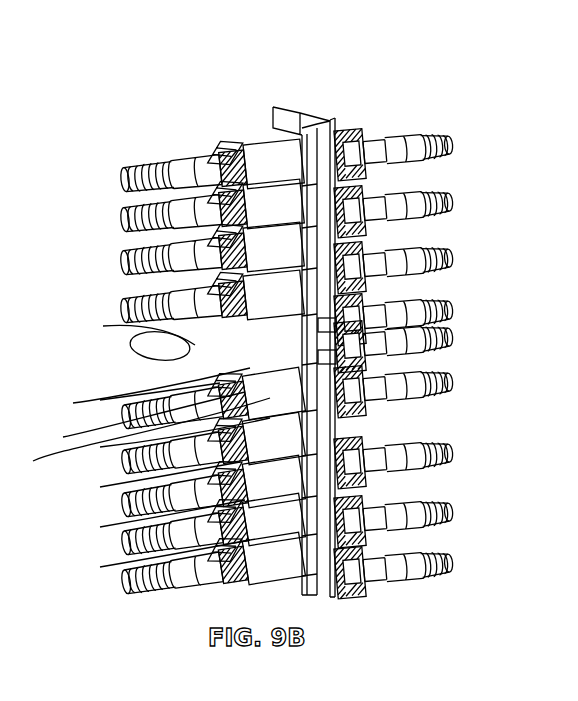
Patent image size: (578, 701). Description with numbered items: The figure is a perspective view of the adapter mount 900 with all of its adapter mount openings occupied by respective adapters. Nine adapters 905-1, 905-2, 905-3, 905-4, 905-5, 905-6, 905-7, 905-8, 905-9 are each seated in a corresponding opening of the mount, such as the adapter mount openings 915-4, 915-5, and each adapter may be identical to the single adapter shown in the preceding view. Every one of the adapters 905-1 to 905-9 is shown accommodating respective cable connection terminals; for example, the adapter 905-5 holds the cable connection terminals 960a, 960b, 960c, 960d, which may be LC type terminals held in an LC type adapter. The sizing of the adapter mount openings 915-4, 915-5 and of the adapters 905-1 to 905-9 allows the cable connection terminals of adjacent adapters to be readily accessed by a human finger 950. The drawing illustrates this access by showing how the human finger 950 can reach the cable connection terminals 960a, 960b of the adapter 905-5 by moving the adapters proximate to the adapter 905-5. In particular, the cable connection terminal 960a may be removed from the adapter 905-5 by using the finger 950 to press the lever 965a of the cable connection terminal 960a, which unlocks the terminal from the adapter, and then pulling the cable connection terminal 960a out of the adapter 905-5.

The adapter mount 900 is at (290, 120).
The adapter 905-1 is at (283, 163).
The adapter 905-2 is at (277, 218).
The adapter 905-3 is at (277, 265).
The adapter 905-4 is at (277, 313).
The adapter 905-5 is at (240, 440).
The adapter 905-6 is at (225, 465).
The adapter 905-7 is at (235, 505).
The adapter 905-8 is at (240, 545).
The adapter 905-9 is at (272, 575).
The adapter mount opening 915-4 is at (320, 327).
The adapter mount opening 915-5 is at (320, 357).
The human finger 950 is at (110, 352).
The cable connection terminal 960a is at (135, 436).
The cable connection terminal 960b is at (131, 419).
The cable connection terminal 960c is at (443, 350).
The cable connection terminal 960d is at (445, 330).
The lever 965a is at (139, 391).